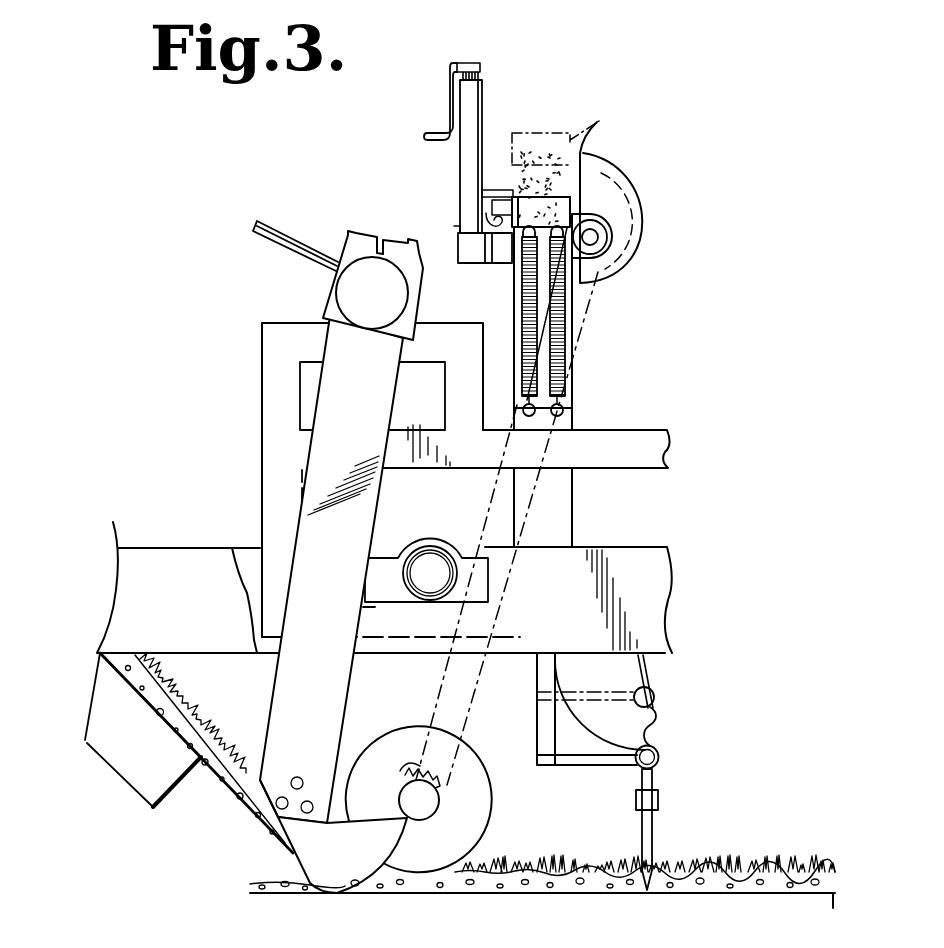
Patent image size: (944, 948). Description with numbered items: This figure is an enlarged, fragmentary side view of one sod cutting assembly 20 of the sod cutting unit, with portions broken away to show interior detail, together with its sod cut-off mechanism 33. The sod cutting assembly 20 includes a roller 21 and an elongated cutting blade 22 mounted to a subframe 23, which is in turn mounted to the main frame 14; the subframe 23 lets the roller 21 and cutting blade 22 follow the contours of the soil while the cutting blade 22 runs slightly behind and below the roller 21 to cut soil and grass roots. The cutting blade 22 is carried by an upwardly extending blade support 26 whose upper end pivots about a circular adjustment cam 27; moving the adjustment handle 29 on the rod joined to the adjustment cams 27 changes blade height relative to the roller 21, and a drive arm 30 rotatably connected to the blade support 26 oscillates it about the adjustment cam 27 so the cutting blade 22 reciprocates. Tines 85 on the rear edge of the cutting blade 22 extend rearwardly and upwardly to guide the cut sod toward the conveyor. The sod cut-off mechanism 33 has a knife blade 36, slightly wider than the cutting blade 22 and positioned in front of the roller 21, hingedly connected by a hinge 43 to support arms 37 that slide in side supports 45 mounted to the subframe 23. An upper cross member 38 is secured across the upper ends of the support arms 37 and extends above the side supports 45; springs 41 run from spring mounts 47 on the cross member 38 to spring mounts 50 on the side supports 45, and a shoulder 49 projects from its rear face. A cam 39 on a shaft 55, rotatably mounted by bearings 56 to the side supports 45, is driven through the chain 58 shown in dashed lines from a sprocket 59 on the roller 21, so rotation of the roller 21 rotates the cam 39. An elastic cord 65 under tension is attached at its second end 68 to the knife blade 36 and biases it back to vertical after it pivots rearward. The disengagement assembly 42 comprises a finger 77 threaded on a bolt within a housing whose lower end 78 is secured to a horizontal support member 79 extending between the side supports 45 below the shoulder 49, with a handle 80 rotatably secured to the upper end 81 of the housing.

The main frame 14 is at (150, 548).
The sod cutting assembly 20 is at (352, 191).
The roller 21 is at (485, 806).
The cutting blade 22 is at (315, 884).
The subframe 23 is at (262, 352).
The blade support 26 is at (320, 447).
The adjustment cam 27 is at (356, 280).
The adjustment handle 29 is at (272, 214).
The drive arm 30 is at (380, 556).
The sod cut-off mechanism 33 is at (693, 772).
The knife blade 36 is at (682, 794).
The support arm 37 is at (538, 736).
The upper cross member 38 is at (602, 120).
The cam 39 is at (612, 161).
The spring 41 is at (520, 360).
The disengagement assembly 42 is at (464, 63).
The hinge 43 is at (655, 755).
The side support 45 is at (573, 315).
The spring mount 47 is at (513, 195).
The shoulder 49 is at (460, 193).
The spring mount 50 is at (565, 410).
The shaft 55 is at (592, 237).
The bearing 56 is at (622, 258).
The chain 58 is at (512, 620).
The sprocket 59 is at (402, 770).
The elastic cord 65 is at (656, 663).
The second end 68 is at (660, 690).
The finger 77 is at (485, 216).
The lower end 78 is at (457, 223).
The horizontal support member 79 is at (466, 256).
The handle 80 is at (450, 102).
The upper end 81 is at (483, 82).
The tines 85 is at (240, 800).